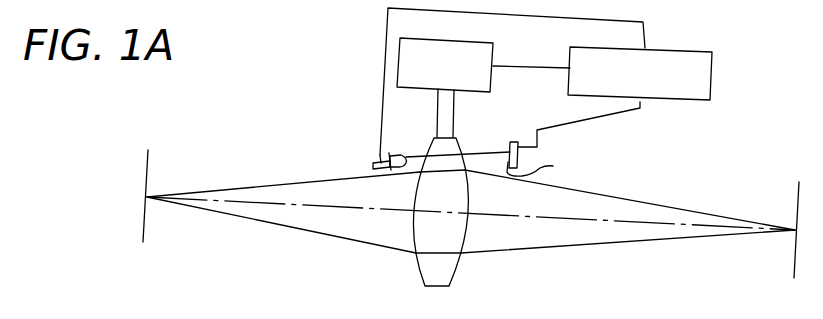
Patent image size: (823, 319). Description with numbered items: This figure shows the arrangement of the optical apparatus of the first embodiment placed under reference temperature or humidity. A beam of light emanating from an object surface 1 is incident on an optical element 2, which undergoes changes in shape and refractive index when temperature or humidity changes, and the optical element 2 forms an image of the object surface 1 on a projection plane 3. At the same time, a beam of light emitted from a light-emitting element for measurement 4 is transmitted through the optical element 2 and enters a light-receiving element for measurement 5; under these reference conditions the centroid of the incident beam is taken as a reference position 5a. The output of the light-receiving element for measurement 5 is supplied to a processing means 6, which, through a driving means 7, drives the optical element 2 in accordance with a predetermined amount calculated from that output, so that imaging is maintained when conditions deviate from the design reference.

The object surface 1 is at (150, 163).
The optical element 2 is at (456, 268).
The projection plane 3 is at (796, 212).
The light-emitting element for measurement 4 is at (401, 152).
The light-receiving element for measurement 5 is at (514, 141).
The reference position 5a is at (545, 172).
The processing means 6 is at (712, 62).
The driving means 7 is at (493, 50).